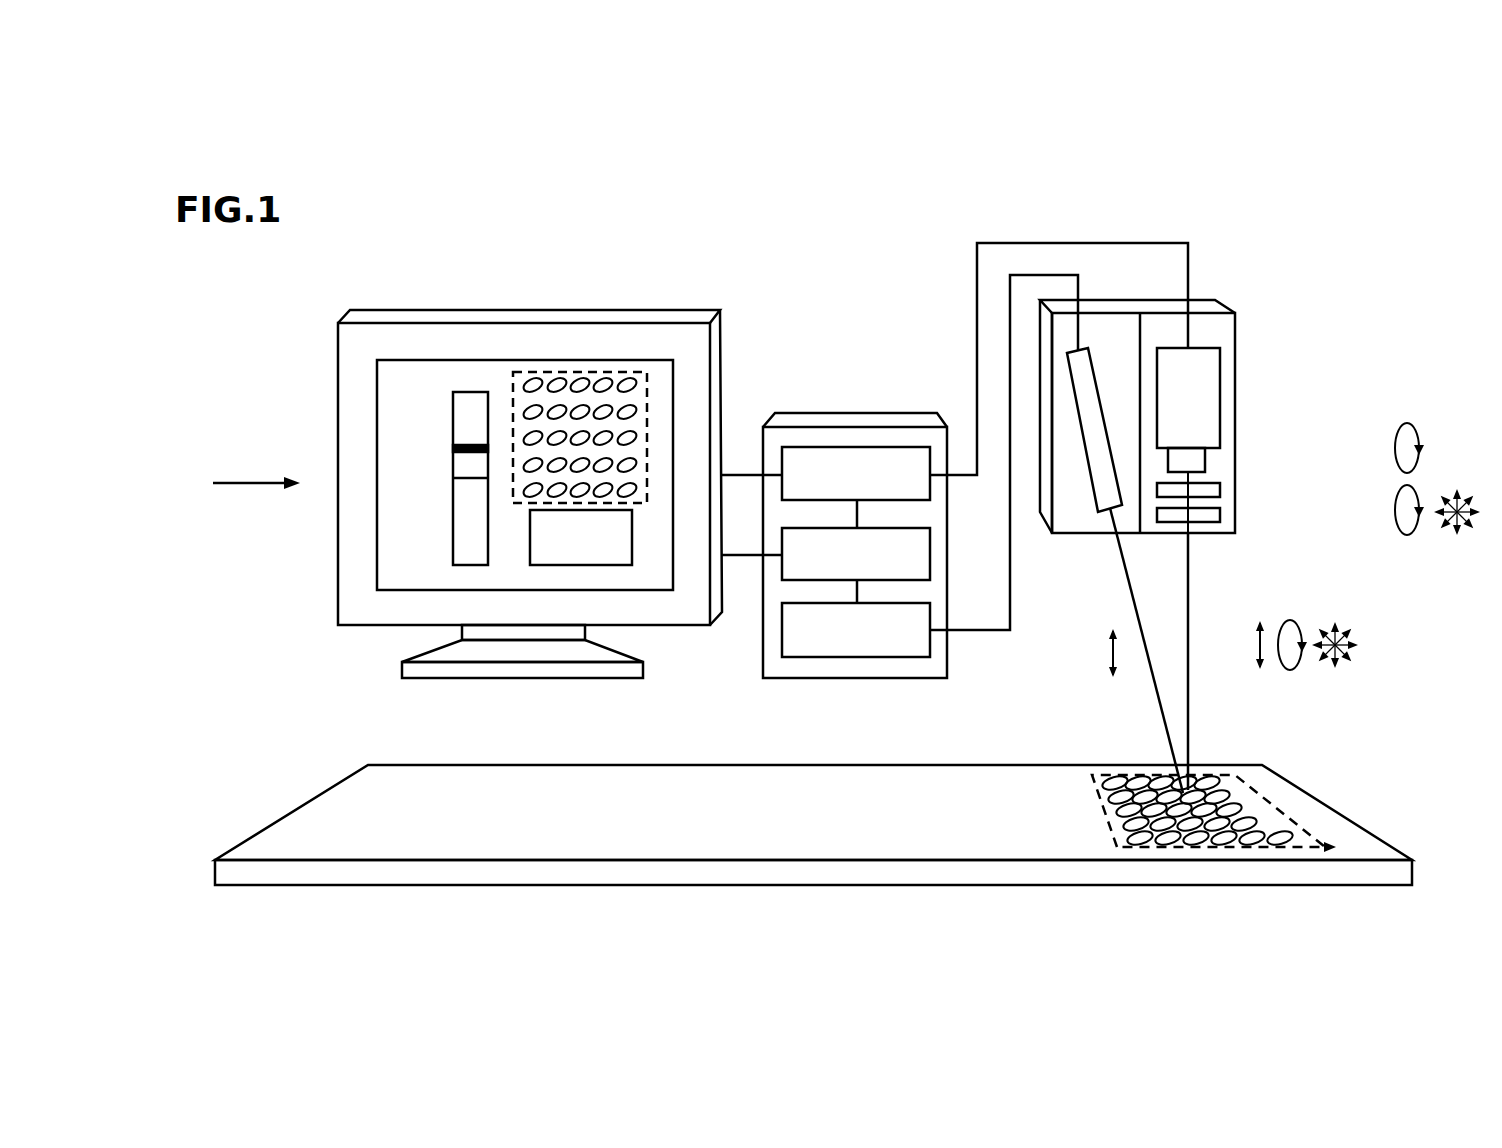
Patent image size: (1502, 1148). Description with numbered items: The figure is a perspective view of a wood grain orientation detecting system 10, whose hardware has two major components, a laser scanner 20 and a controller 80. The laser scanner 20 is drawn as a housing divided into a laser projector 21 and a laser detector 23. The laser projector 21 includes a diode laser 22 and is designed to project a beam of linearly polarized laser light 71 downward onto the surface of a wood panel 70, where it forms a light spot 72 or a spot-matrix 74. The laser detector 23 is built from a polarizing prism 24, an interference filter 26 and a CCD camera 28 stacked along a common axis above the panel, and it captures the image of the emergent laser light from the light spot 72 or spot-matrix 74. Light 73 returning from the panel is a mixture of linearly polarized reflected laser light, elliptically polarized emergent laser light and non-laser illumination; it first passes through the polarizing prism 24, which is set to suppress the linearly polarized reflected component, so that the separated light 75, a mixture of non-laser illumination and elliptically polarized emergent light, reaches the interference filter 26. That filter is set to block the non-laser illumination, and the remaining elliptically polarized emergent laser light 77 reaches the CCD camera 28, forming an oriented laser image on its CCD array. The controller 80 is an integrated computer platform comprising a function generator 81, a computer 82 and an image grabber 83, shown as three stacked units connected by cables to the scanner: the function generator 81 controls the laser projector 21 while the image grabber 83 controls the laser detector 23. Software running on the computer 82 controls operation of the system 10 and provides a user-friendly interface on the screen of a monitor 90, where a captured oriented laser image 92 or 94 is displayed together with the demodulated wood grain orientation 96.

The wood grain orientation detecting system 10 is at (236, 484).
The laser scanner 20 is at (1217, 300).
The laser projector 21 is at (1091, 423).
The diode laser 22 is at (1098, 512).
The laser detector 23 is at (1183, 423).
The polarizing prism 24 is at (1220, 515).
The interference filter 26 is at (1220, 492).
The CCD camera 28 is at (1220, 432).
The wood panel 70 is at (1063, 797).
The linearly polarized laser light 71 is at (1145, 645).
The light spot 72 is at (1207, 780).
The light 73 is at (1188, 646).
The spot-matrix 74 is at (1275, 805).
The separated light 75 is at (1188, 503).
The elliptically polarized emergent laser light 77 is at (1188, 476).
The controller 80 is at (857, 413).
The function generator 81 is at (856, 630).
The computer 82 is at (856, 554).
The image grabber 83 is at (856, 473).
The monitor 90 is at (378, 310).
The captured oriented laser image 92 is at (580, 436).
The captured oriented laser image 94 is at (632, 372).
The demodulated wood grain orientation 96 is at (557, 557).